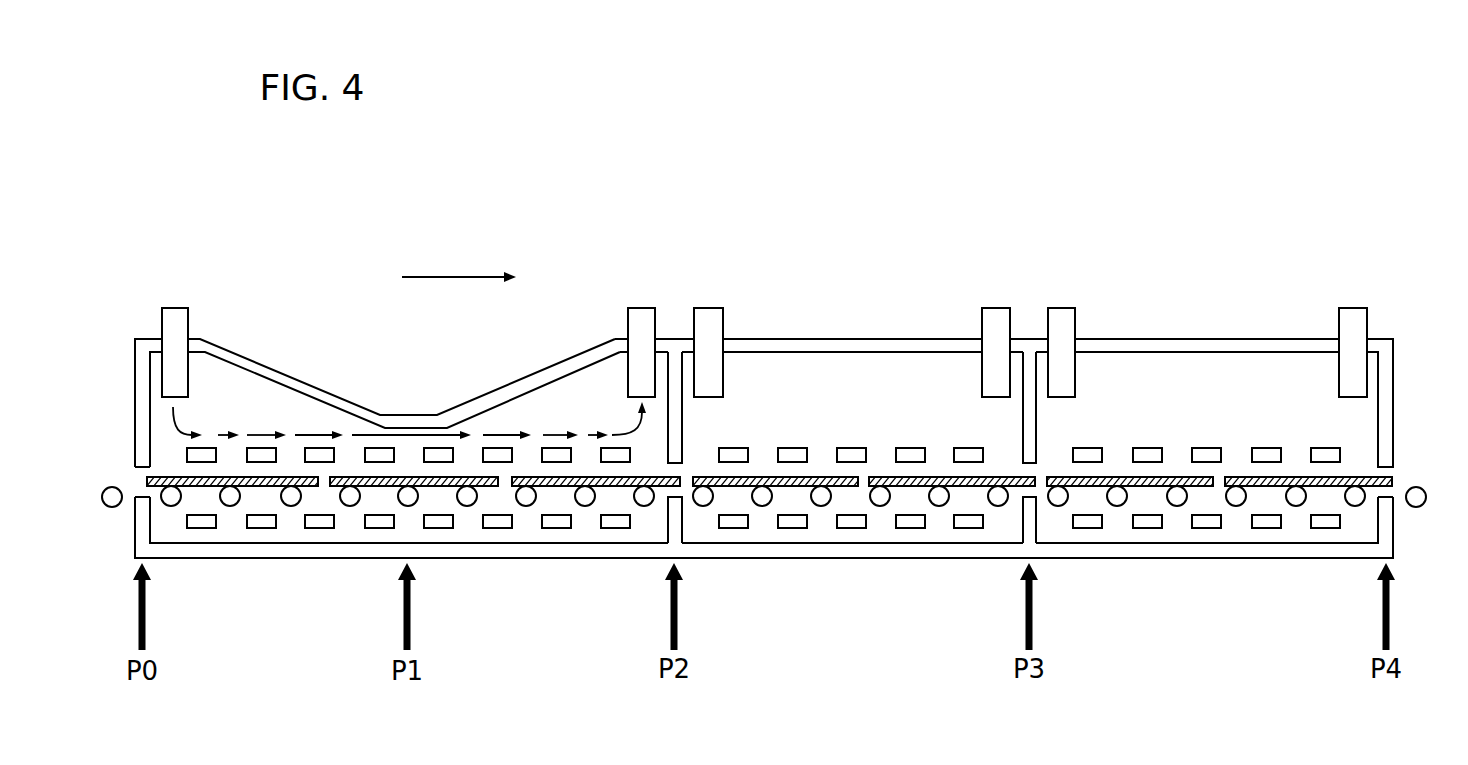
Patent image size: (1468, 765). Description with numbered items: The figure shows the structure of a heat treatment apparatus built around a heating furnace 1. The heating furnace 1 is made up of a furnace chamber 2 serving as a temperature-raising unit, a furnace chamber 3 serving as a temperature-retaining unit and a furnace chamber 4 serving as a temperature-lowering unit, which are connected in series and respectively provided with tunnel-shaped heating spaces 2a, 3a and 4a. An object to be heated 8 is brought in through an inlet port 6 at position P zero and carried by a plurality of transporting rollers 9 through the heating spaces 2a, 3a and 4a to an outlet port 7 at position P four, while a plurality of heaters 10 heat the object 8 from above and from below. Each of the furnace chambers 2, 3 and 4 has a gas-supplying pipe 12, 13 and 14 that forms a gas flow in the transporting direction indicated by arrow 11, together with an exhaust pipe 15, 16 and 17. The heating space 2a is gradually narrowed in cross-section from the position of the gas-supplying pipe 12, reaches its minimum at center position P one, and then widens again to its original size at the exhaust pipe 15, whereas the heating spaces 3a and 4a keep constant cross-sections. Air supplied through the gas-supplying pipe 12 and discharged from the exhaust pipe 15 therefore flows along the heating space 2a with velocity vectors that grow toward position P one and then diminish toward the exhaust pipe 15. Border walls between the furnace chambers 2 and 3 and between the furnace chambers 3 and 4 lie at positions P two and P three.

The heating furnace 1 is at (764, 383).
The furnace chamber 2 is at (305, 378).
The heating space 2a is at (265, 405).
The furnace chamber 3 is at (800, 338).
The heating space 3a is at (883, 380).
The furnace chamber 4 is at (1158, 338).
The heating space 4a is at (1238, 380).
The inlet port 6 is at (136, 478).
The outlet port 7 is at (1397, 468).
The object to be heated 8 is at (307, 487).
The transporting rollers 9 is at (112, 507).
The heaters 10 is at (208, 453).
The arrow 11 is at (438, 277).
The gas-supplying pipe 12 is at (168, 313).
The gas-supplying pipe 13 is at (710, 313).
The gas-supplying pipe 14 is at (1060, 313).
The exhaust pipe 15 is at (645, 313).
The exhaust pipe 16 is at (995, 313).
The exhaust pipe 17 is at (1353, 313).